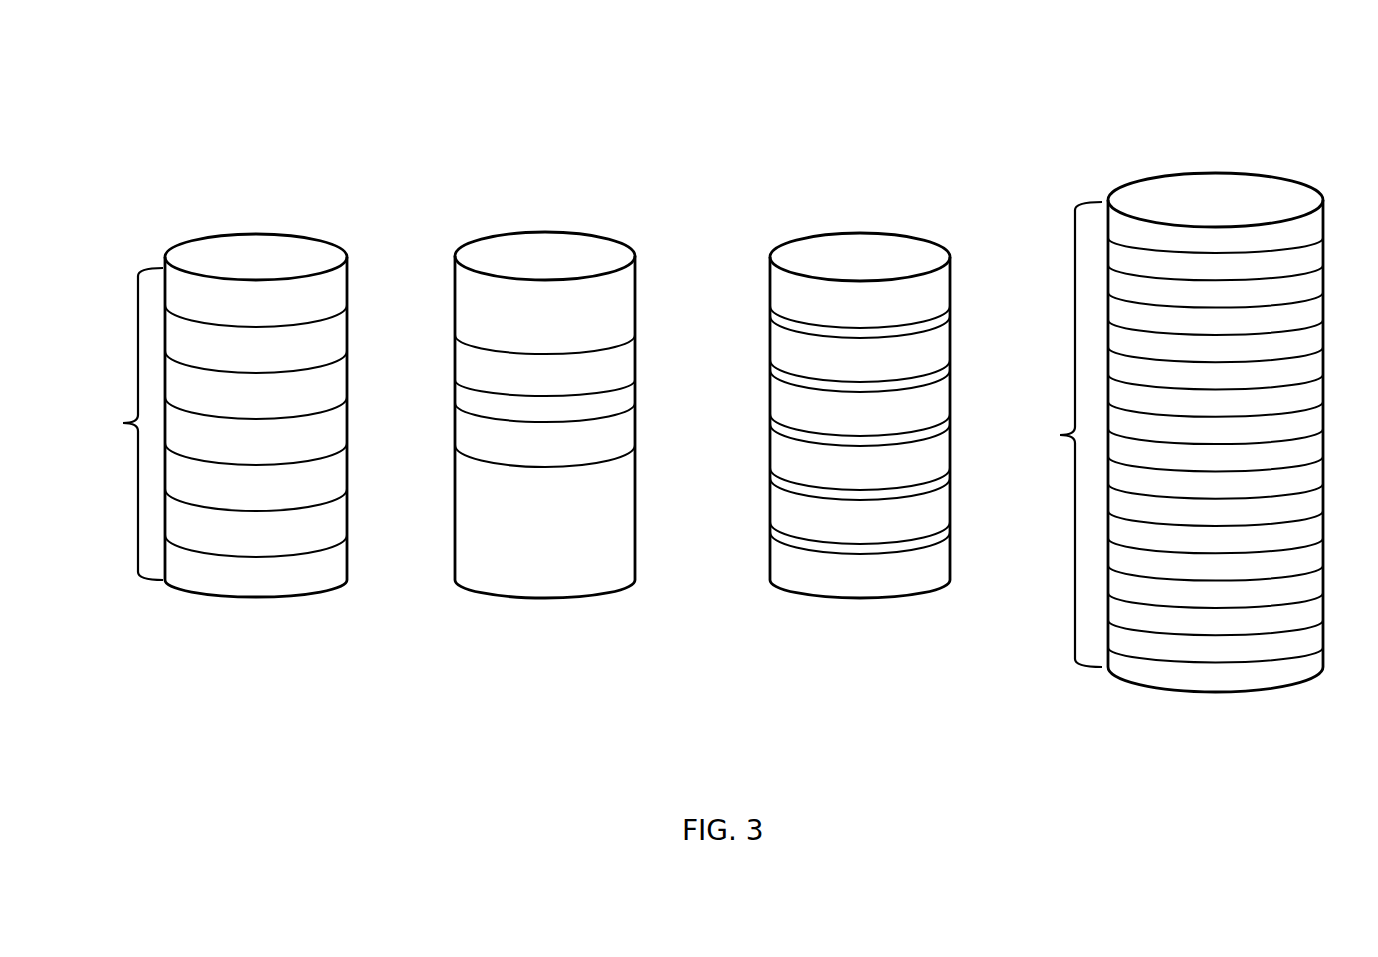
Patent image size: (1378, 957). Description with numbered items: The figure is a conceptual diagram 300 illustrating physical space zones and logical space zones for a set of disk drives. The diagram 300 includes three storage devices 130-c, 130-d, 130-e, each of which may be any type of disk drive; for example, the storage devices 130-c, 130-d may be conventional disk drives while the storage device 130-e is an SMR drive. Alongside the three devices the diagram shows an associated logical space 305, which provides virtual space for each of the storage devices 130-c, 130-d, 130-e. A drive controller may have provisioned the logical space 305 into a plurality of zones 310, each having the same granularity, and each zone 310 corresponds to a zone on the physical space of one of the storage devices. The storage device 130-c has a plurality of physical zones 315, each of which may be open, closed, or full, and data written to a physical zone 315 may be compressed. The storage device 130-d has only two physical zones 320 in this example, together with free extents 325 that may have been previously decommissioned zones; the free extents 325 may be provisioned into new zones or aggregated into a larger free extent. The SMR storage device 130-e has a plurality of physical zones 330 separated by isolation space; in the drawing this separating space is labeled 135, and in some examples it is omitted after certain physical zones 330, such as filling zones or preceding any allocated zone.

The conceptual diagram 300 is at (1307, 96).
The logical space 305 is at (1282, 176).
The zones 310 is at (1054, 434).
The physical zones 315 is at (115, 424).
The physical zones 320 is at (545, 415).
The free extents 325 is at (545, 421).
The physical zones 330 is at (860, 437).
The interstitial layer 135 is at (770, 319).
The storage device 130-c is at (312, 240).
The storage device 130-d is at (605, 240).
The storage device 130-e is at (918, 238).